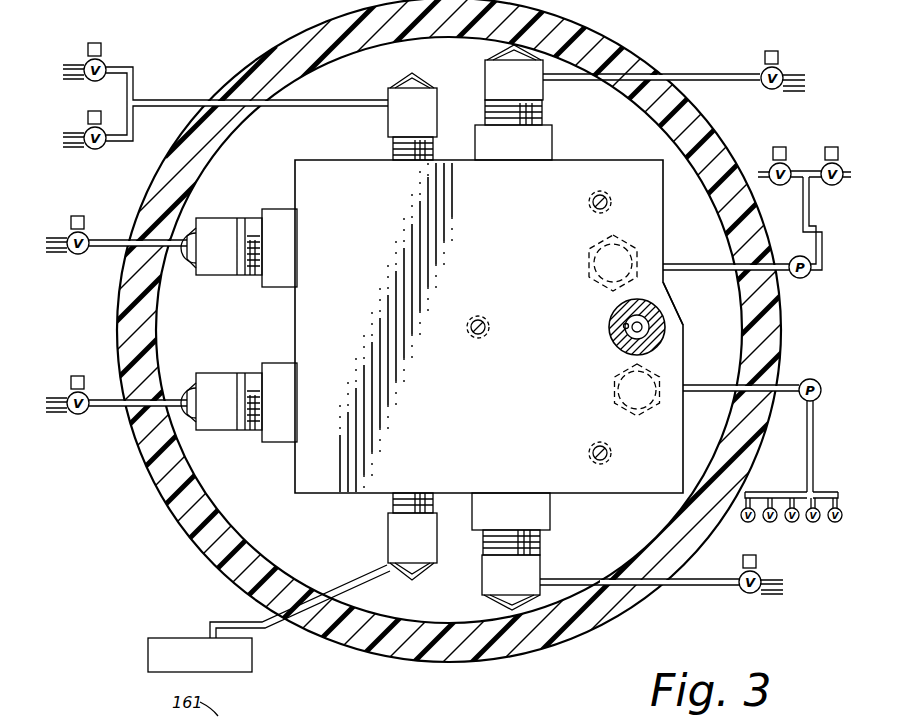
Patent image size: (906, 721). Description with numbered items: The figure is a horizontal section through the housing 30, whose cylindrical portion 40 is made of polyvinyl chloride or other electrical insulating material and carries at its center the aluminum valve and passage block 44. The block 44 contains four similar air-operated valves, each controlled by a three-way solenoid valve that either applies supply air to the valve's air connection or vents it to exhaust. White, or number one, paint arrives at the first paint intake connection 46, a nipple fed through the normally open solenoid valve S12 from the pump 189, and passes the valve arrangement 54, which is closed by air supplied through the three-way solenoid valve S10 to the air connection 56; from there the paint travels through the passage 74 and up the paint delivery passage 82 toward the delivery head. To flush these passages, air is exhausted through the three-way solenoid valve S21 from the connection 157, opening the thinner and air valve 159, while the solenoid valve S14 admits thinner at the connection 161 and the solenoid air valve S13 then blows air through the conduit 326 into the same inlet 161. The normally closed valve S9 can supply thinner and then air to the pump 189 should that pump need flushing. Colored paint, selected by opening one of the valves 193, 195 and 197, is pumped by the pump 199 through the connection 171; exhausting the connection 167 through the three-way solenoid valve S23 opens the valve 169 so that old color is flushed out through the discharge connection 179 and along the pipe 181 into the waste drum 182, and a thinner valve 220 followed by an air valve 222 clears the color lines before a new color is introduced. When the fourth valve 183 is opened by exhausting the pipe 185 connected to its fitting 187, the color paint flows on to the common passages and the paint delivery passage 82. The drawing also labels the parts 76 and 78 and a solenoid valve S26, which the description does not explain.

The housing 30 is at (246, 58).
The cylindrical housing portion 40 is at (180, 508).
The valve and passage block 44 is at (336, 478).
The first paint intake connection 46 is at (645, 246).
The valve arrangement 54 is at (528, 158).
The air connection 56 is at (492, 92).
The passage 74 is at (650, 327).
The passage 76 is at (655, 295).
The bearing 78 is at (656, 342).
The paint delivery passage 82 is at (623, 326).
The connection 157 is at (222, 222).
The thinner and air valve 159 is at (297, 265).
The connection 161 is at (400, 95).
The connection 167 is at (222, 408).
The valve 169 is at (297, 385).
The connection 171 is at (665, 380).
The discharge connection 179 is at (400, 533).
The pipe 181 is at (224, 620).
The drum 182 is at (158, 645).
The fourth valve 183 is at (530, 498).
The pipe 185 is at (705, 588).
The fitting 187 is at (498, 570).
The pump 189 is at (800, 280).
The valve 193 is at (748, 523).
The valve 195 is at (770, 523).
The valve 197 is at (808, 530).
The pump 199 is at (812, 378).
The thinner valve 220 is at (813, 523).
The air valve 222 is at (835, 523).
The conduit 326 is at (330, 144).
The valve S9 is at (778, 160).
The three way solenoid valve S10 is at (779, 55).
The solenoid valve S12 is at (832, 160).
The solenoid air valve S13 is at (95, 44).
The solenoid valve S14 is at (95, 124).
The three way solenoid valve S21 is at (78, 230).
The three way solenoid valve S23 is at (78, 390).
The solenoid valve S26 is at (745, 563).